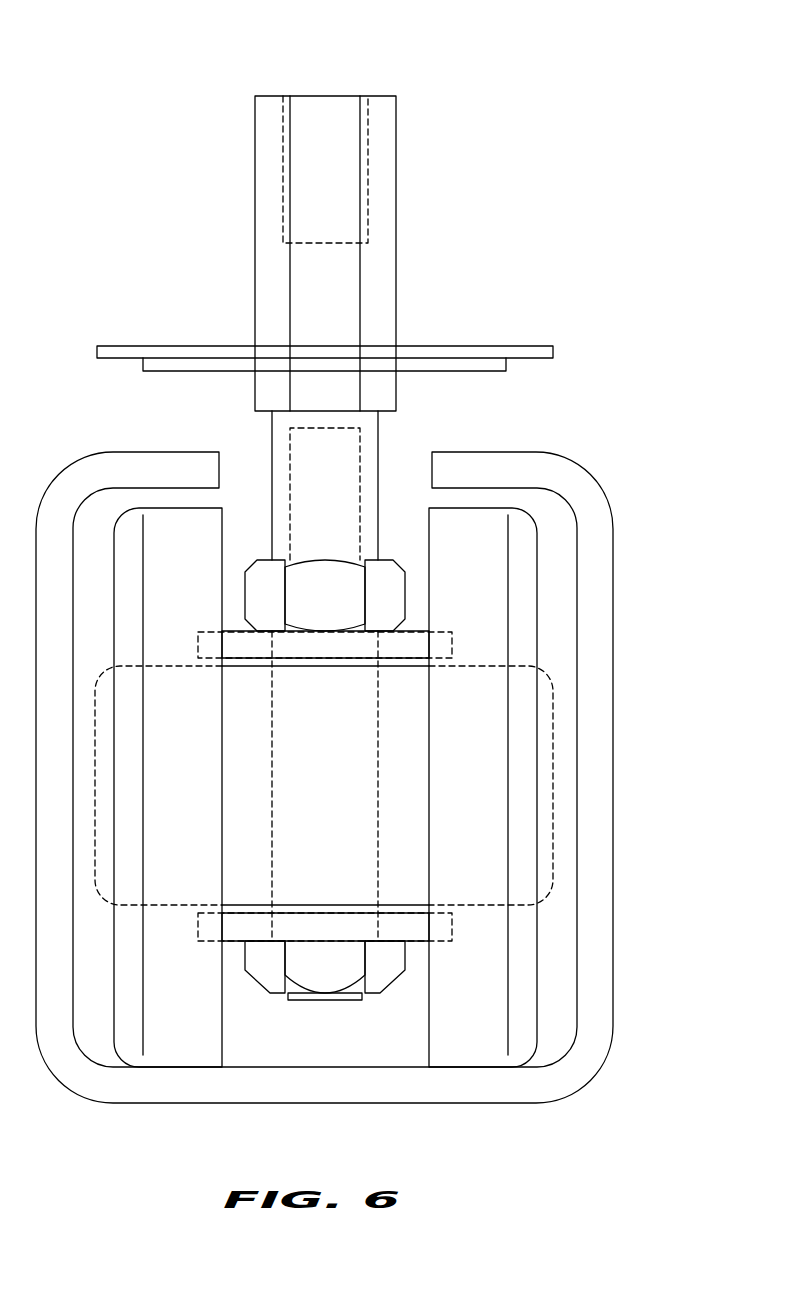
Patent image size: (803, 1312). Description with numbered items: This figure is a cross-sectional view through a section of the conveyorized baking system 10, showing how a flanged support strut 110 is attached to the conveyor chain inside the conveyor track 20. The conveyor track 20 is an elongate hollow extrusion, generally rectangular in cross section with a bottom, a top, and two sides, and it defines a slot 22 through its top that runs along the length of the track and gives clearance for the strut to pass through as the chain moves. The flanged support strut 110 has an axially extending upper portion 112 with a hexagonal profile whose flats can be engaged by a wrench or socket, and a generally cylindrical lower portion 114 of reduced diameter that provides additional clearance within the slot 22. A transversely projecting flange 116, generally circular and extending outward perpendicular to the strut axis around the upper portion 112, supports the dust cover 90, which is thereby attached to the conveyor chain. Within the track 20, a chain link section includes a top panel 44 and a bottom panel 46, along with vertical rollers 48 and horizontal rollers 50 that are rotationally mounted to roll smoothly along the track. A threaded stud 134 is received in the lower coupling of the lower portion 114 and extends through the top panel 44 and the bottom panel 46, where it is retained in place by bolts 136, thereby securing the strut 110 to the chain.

The conveyorized baking system 10 is at (646, 103).
The flanged support strut 110 is at (218, 132).
The upper portion 112 is at (378, 284).
The lower portion 114 is at (278, 447).
The dust cover 90 is at (530, 345).
The transversely projecting flange 116 is at (503, 362).
The slot 22 is at (404, 460).
The conveyor track 20 is at (594, 949).
The vertical rollers 48 is at (172, 1040).
The horizontal rollers 50 is at (545, 810).
The top panel 44 is at (400, 646).
The bottom panel 46 is at (405, 925).
The bolts 136 is at (266, 598).
The threaded stud 134 is at (330, 1000).